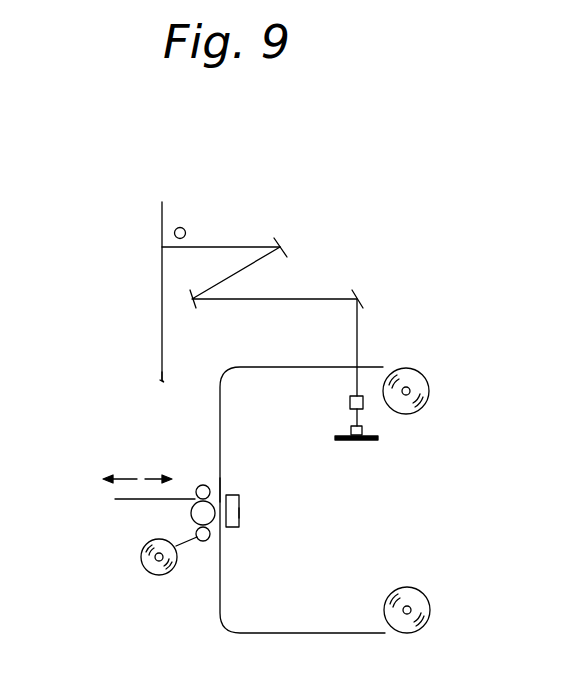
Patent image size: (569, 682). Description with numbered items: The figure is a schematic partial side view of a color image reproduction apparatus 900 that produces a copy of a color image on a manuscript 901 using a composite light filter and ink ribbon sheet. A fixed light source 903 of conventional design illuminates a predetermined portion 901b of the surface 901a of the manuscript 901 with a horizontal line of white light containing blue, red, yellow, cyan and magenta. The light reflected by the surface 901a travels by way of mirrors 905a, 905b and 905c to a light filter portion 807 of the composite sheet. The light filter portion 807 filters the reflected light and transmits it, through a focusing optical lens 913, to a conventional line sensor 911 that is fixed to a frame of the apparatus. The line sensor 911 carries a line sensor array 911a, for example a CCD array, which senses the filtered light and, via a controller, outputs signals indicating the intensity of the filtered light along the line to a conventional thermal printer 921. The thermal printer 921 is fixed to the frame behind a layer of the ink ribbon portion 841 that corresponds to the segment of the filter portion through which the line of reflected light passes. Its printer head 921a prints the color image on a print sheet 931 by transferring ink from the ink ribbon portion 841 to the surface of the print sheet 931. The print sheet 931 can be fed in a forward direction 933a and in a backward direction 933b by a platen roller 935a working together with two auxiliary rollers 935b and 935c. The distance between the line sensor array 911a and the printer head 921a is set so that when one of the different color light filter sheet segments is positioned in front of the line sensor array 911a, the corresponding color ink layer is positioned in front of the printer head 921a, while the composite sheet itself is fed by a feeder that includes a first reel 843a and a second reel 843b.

The color image reproduction apparatus 900 is at (276, 192).
The manuscript 901 is at (162, 210).
The surface of the manuscript 901a is at (166, 380).
The predetermined portion of the surface 901b is at (162, 247).
The light source 903 is at (183, 228).
The mirror 905a is at (289, 254).
The mirror 905b is at (193, 309).
The mirror 905c is at (362, 294).
The light filter portion 807 is at (373, 367).
The focusing optical lens 913 is at (350, 403).
The line sensor 911 is at (372, 441).
The line sensor array 911a is at (364, 428).
The first reel 843a is at (413, 604).
The second reel 843b is at (412, 383).
The ink ribbon portion 841 is at (222, 492).
The thermal printer 921 is at (240, 500).
The printer head 921a is at (240, 516).
The print sheet 931 is at (178, 580).
The forward direction 933a is at (125, 476).
The backward direction 933b is at (158, 477).
The platen roller 935a is at (191, 512).
The auxiliary roller 935b is at (203, 542).
The auxiliary roller 935c is at (203, 485).